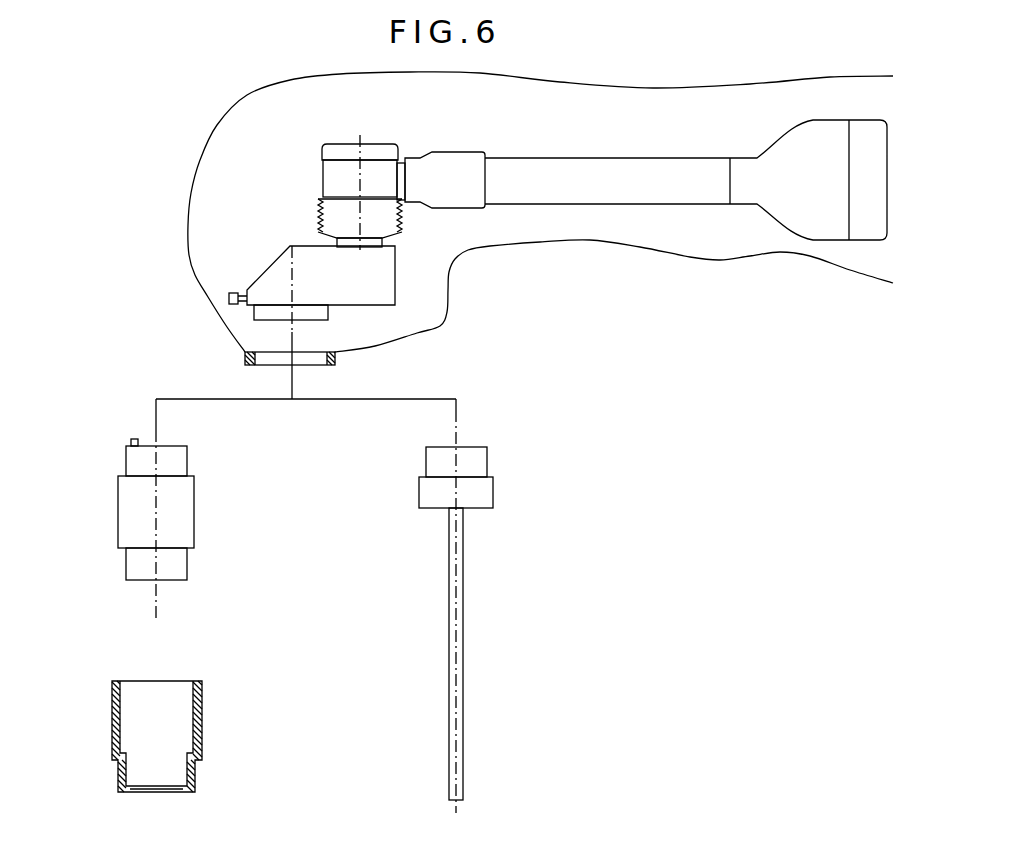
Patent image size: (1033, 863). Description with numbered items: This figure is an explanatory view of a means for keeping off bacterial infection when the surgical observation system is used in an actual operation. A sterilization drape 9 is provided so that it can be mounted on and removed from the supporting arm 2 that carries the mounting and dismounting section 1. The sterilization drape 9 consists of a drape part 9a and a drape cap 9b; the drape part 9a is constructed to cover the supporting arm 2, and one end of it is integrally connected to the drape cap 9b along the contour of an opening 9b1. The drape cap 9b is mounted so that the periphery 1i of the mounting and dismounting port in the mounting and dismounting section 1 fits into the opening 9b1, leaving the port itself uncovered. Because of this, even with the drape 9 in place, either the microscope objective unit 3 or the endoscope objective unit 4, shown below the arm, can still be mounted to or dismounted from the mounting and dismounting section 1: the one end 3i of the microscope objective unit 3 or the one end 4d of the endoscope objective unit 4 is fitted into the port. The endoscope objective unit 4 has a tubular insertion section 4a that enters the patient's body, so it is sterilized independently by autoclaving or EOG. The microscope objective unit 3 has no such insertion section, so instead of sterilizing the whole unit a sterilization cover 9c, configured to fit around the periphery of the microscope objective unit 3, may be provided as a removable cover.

The mounting and dismounting section 1 is at (287, 270).
The periphery of the mounting and dismounting port 1i is at (320, 313).
The supporting arm 2 is at (567, 170).
The microscope objective unit 3 is at (88, 452).
The one end of the microscope objective unit 3i is at (207, 446).
The endoscope objective unit 4 is at (528, 438).
The tubular insertion section 4a is at (462, 625).
The one end of the endoscope objective unit 4d is at (505, 447).
The sterilization drape 9 is at (648, 263).
The drape part 9a is at (450, 273).
The drape cap 9b is at (338, 365).
The opening 9b1 is at (245, 360).
The sterilization cover 9c is at (203, 707).